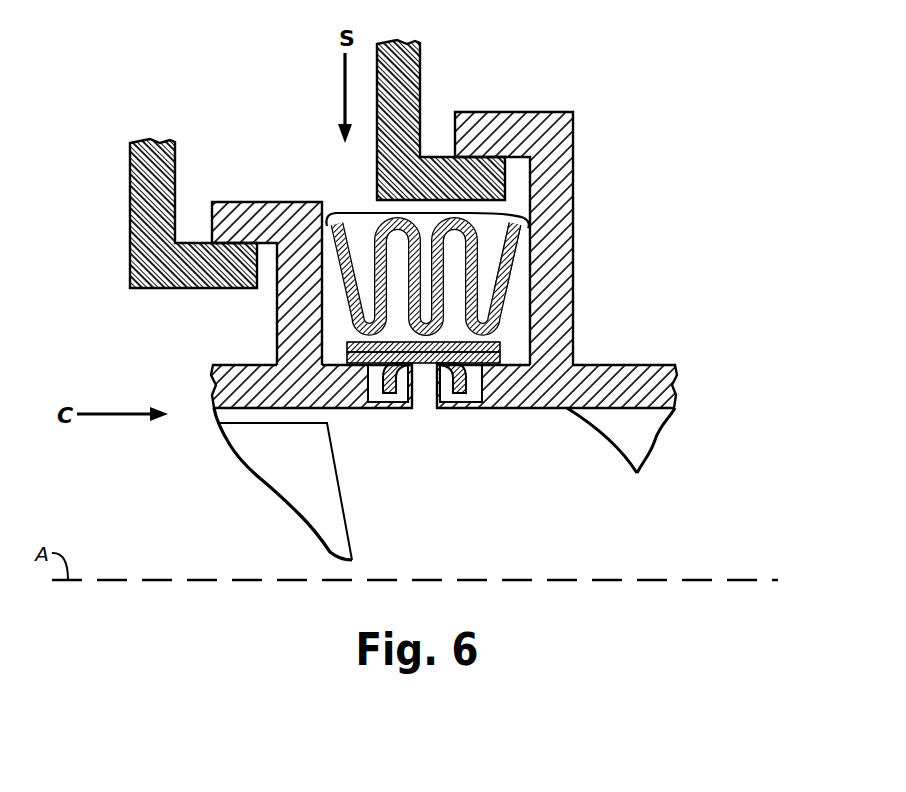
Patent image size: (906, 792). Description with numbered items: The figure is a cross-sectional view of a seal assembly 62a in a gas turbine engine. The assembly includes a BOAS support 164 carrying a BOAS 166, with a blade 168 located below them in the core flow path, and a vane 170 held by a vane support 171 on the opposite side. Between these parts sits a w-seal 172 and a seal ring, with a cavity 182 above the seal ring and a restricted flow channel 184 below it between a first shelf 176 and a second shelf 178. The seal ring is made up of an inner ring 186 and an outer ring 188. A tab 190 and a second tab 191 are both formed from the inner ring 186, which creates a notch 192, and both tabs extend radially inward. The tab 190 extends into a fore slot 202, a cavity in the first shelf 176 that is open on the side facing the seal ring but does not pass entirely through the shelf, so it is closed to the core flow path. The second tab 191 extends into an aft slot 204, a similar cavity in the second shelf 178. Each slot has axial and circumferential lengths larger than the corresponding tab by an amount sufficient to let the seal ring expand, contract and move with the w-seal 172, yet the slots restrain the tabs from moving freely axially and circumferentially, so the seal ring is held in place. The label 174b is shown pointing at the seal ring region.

The seal assembly 62a is at (156, 65).
The BOAS support 164 is at (166, 195).
The vane support 171 is at (414, 95).
The BOAS 166 is at (292, 222).
The vane 170 is at (557, 287).
The first shelf 176 is at (349, 397).
The second shelf 178 is at (526, 397).
The blade 168 is at (277, 457).
The cavity 182 is at (350, 210).
The notch 192 is at (403, 357).
The outer ring 188 is at (490, 346).
The inner ring 186 is at (500, 357).
The w-seal 172 is at (524, 231).
The seal member 174b is at (520, 332).
The fore slot 202 is at (365, 405).
The aft slot 204 is at (480, 405).
The tab 190 is at (390, 393).
The second tab 191 is at (454, 393).
The restricted flow channel 184 is at (422, 405).